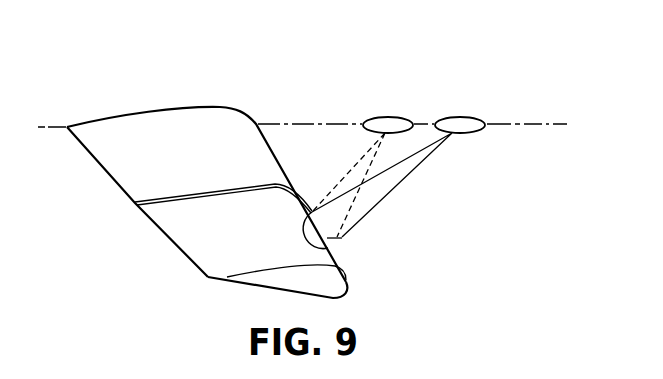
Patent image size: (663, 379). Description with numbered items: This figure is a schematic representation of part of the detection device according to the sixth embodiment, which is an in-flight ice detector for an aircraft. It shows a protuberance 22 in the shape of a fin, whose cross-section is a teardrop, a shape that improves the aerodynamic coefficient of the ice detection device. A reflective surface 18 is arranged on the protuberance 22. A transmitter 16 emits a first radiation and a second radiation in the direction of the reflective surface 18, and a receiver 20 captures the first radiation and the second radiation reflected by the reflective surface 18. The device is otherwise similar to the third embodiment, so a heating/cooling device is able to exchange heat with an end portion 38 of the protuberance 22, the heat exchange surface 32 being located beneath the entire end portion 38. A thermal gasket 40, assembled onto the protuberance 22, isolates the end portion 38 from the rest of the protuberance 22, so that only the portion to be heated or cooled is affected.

The transmitter 16 is at (470, 123).
The reflective surface 18 is at (330, 240).
The receiver 20 is at (384, 123).
The protuberance 22 is at (118, 162).
The heat exchange surface 32 is at (170, 217).
The end portion 38 is at (217, 260).
The thermal gasket 40 is at (135, 203).